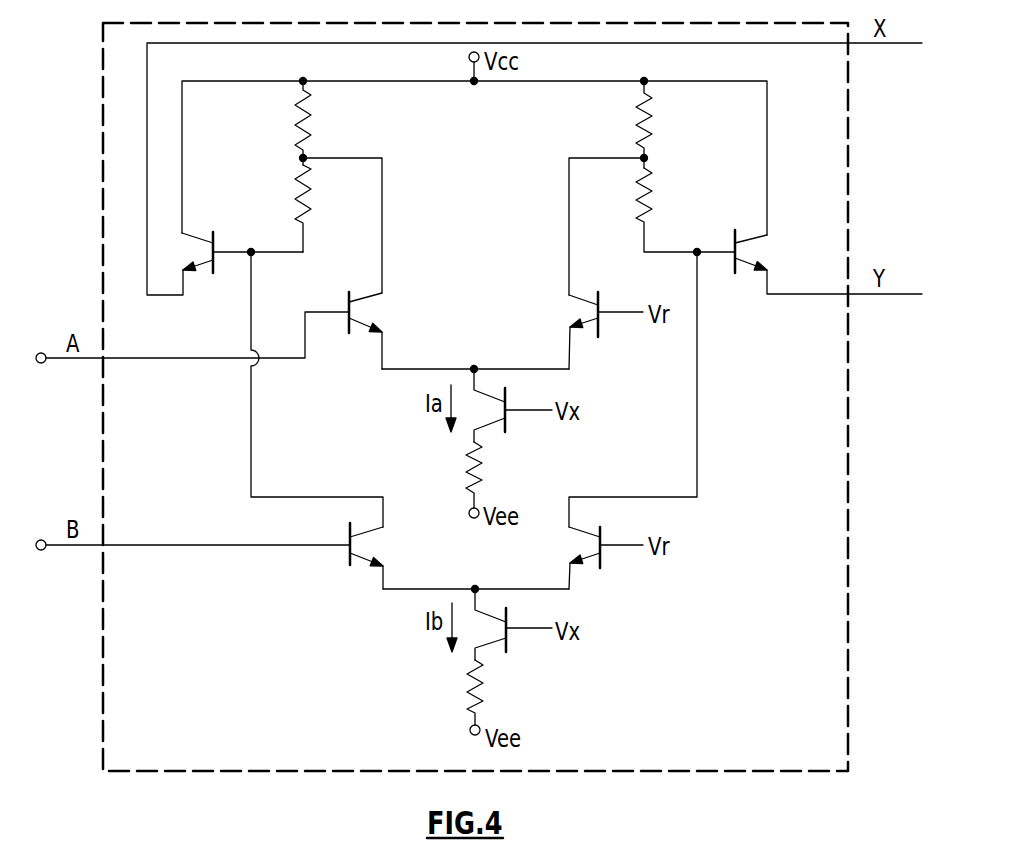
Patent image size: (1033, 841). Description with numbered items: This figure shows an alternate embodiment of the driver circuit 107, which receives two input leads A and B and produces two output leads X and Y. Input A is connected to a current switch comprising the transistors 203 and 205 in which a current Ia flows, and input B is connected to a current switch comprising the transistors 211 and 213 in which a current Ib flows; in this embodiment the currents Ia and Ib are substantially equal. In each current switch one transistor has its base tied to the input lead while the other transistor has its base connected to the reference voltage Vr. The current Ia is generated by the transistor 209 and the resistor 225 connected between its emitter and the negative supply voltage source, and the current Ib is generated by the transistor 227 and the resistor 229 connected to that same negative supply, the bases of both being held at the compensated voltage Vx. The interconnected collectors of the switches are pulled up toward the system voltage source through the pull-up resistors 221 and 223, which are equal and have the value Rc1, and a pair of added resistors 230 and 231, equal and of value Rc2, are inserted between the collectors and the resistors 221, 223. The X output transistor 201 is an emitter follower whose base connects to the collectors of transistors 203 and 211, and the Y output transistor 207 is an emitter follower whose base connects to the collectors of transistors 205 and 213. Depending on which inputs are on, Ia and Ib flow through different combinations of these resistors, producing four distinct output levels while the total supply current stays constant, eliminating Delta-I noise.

The driver circuit 107 is at (848, 428).
The X output transistor 201 is at (216, 242).
The transistor 203 is at (349, 298).
The transistor 205 is at (603, 330).
The Y output transistor 207 is at (748, 266).
The transistor 209 is at (508, 430).
The transistor 211 is at (350, 560).
The transistor 213 is at (602, 563).
The collector pull-up resistor 221 is at (311, 122).
The pull-up resistor 223 is at (640, 132).
The resistor 225 is at (483, 482).
The transistor 227 is at (508, 650).
The resistor 229 is at (483, 702).
The resistor 230 is at (298, 186).
The resistor 231 is at (652, 192).